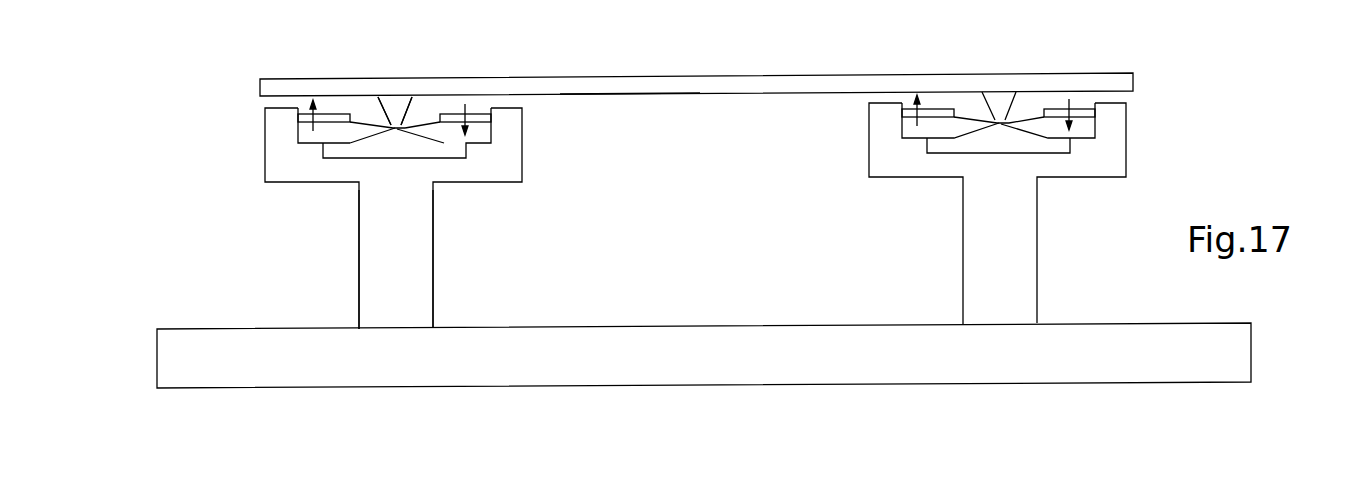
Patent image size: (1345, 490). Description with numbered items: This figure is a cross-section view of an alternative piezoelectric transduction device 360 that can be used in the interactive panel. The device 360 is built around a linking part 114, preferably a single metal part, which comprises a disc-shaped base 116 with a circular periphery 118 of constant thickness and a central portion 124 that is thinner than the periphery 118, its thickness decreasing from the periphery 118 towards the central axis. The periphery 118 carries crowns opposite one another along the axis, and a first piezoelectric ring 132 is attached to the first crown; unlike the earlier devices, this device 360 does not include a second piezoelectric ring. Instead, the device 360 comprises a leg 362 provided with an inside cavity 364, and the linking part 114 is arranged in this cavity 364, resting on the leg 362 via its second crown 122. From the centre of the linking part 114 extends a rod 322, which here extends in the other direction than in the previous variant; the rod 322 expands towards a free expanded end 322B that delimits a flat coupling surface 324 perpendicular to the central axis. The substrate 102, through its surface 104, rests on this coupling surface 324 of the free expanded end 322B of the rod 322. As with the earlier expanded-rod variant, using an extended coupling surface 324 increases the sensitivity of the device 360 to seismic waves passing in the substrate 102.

The substrate 102 is at (260, 88).
The surface of the substrate 104 is at (623, 108).
The linking part 114 is at (357, 105).
The base 116 is at (483, 130).
The circular periphery 118 is at (453, 135).
The second crown 122 is at (312, 154).
The central portion 124 is at (422, 128).
The first piezoelectric ring 132 is at (487, 112).
The rod 322 is at (410, 121).
The free expanded end 322B is at (401, 97).
The coupling surface 324 is at (388, 87).
The piezoelectric transduction device 360 is at (211, 122).
The leg 362 is at (423, 268).
The inside cavity 364 is at (362, 150).